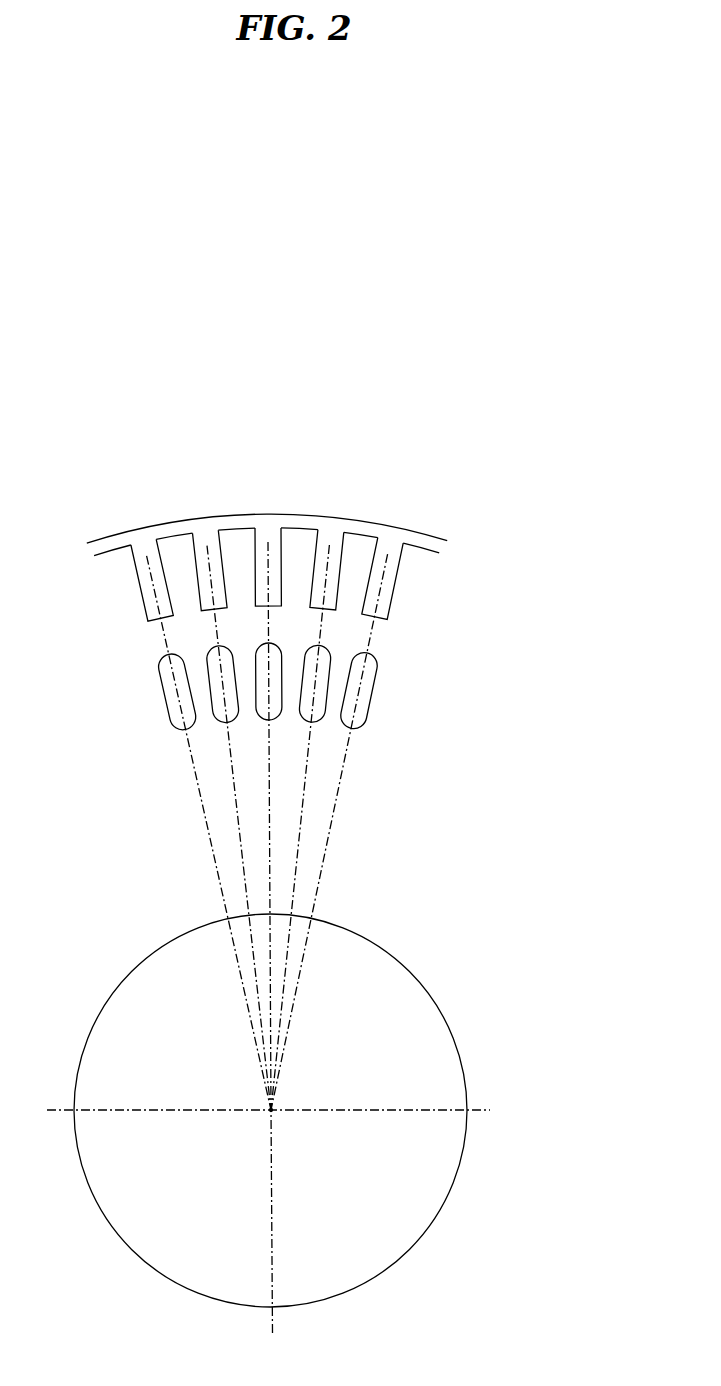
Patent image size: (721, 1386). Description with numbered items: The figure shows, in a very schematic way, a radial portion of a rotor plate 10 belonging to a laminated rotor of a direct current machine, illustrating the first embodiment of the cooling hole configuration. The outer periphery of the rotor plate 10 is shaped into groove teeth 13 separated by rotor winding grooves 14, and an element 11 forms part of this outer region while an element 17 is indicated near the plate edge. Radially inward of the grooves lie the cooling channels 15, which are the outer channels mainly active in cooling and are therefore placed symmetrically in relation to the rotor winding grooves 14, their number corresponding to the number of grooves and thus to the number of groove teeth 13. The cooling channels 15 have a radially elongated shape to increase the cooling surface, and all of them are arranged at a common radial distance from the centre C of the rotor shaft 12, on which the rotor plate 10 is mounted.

The rotor plate 10 is at (349, 811).
The stator yoke 11 is at (325, 482).
The rotor shaft 12 is at (352, 1063).
The groove teeth 13 is at (355, 552).
The rotor winding grooves 14 is at (268, 540).
The cooling channels 15 is at (378, 673).
The inner peripheral surface 17 is at (108, 545).
The centre of the rotor shaft C is at (273, 1113).